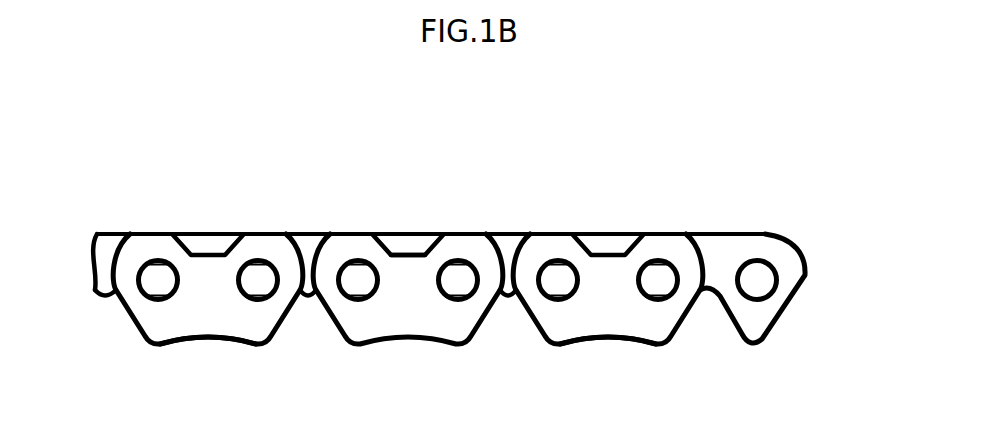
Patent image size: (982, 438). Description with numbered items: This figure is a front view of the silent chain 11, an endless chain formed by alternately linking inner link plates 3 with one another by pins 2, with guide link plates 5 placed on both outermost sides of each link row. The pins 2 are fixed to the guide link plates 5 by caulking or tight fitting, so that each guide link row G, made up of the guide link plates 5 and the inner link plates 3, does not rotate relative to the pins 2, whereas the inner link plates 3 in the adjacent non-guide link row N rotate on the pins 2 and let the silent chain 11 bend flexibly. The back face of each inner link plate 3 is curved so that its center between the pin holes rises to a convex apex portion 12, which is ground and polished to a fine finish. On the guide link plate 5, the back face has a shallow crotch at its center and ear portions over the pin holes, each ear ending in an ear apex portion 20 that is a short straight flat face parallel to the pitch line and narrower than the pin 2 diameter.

The silent chain 11 is at (765, 199).
The inner link plate 3 is at (307, 240).
The ear apex portion 20 is at (357, 240).
The convex apex portion 12 is at (412, 240).
The guide link row G is at (610, 225).
The non-guide link row N is at (713, 227).
The pin 2 is at (148, 284).
The guide link plate 5 is at (213, 328).